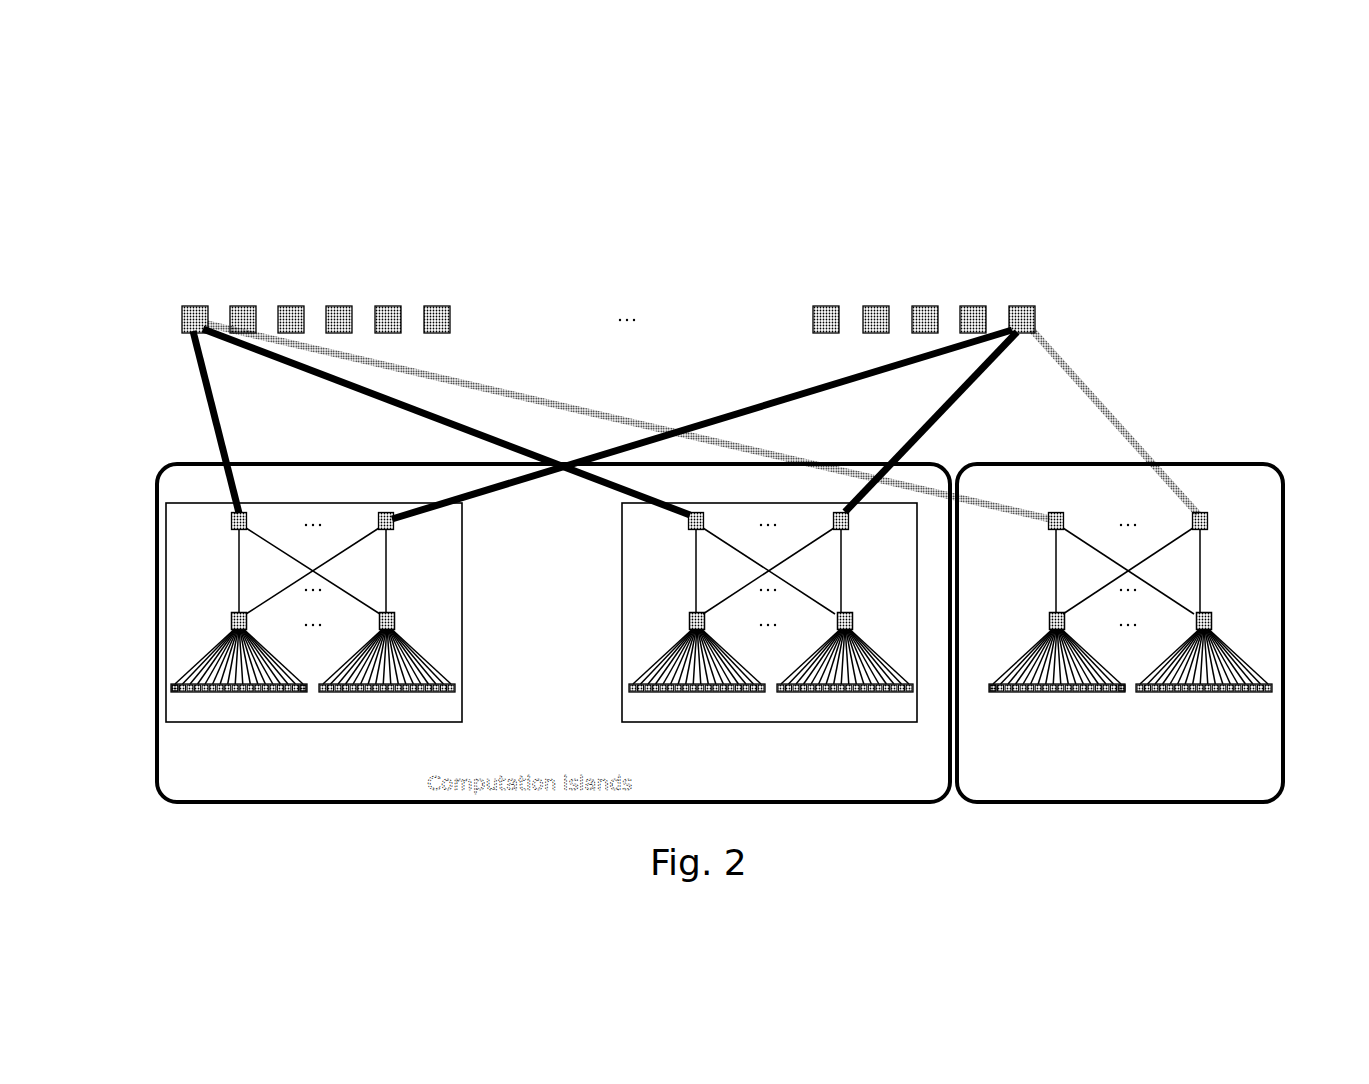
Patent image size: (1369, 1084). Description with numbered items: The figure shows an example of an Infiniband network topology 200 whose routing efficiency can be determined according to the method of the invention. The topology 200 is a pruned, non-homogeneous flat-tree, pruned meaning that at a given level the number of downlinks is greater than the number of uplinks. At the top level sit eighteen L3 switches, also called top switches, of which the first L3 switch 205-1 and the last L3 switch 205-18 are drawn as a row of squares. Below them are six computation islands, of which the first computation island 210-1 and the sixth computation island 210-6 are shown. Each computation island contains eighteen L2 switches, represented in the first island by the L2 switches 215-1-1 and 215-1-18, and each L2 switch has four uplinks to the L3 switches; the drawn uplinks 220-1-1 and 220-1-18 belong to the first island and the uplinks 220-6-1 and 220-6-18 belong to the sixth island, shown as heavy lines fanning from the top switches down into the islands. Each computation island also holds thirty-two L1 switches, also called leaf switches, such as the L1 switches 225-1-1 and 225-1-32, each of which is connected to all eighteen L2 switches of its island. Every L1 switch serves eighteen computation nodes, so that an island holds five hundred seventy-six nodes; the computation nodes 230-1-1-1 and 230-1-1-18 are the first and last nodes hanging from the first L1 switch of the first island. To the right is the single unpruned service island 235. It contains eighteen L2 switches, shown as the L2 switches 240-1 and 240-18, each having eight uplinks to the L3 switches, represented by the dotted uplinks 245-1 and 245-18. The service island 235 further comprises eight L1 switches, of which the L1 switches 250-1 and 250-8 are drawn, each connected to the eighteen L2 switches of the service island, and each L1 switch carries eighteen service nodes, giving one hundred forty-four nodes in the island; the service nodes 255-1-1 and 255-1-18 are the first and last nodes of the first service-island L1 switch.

The topology 200 is at (882, 181).
The L3 switch 205-1 is at (195, 318).
The L3 switch 205-18 is at (1022, 318).
The computation island 210-1 is at (462, 718).
The computation island 210-6 is at (781, 723).
The L2 switch 215-1-1 is at (232, 521).
The L2 switch 215-1-18 is at (393, 521).
The uplink 220-1-1 is at (218, 415).
The uplink 220-6-1 is at (426, 418).
The uplink 220-1-18 is at (745, 402).
The uplink 220-6-18 is at (915, 434).
The L1 switch 225-1-1 is at (232, 621).
The L1 switch 225-1-32 is at (394, 621).
The computation node 230-1-1-1 is at (176, 692).
The computation node 230-1-1-18 is at (302, 692).
The service island 235 is at (1284, 676).
The L2 switch 240-1 is at (1056, 512).
The L2 switch 240-18 is at (1200, 512).
The uplink 245-1 is at (478, 382).
The uplink 245-18 is at (1108, 410).
The L1 switch 250-1 is at (1049, 620).
The L1 switch 250-8 is at (1208, 621).
The service node 255-1-1 is at (992, 693).
The service node 255-1-18 is at (1122, 693).